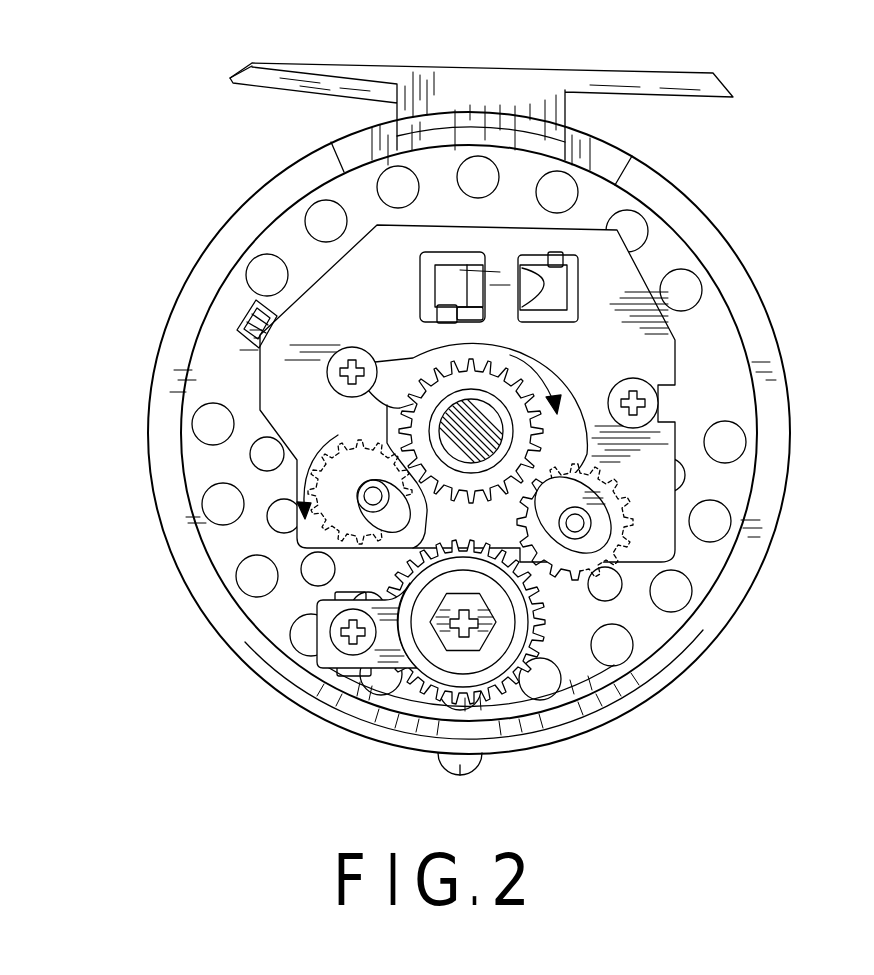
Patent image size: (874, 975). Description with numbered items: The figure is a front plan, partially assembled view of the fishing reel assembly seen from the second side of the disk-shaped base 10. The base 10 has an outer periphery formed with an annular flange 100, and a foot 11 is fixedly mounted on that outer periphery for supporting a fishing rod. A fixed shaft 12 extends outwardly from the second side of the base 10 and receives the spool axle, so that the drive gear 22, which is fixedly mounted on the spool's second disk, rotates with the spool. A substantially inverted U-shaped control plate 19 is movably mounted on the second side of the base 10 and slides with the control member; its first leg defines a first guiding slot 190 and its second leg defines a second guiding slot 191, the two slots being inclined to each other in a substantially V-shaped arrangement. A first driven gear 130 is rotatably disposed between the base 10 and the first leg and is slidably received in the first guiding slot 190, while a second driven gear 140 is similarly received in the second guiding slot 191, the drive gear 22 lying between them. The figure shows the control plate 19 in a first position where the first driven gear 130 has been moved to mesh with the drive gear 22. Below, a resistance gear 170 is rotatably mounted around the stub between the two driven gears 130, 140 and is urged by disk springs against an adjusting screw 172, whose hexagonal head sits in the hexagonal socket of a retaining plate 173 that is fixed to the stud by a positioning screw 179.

The base 10 is at (778, 287).
The foot 11 is at (538, 83).
The fixed shaft 12 is at (485, 438).
The control plate 19 is at (620, 283).
The drive gear 22 is at (505, 385).
The annular flange 100 is at (183, 537).
The first driven gear 130 is at (330, 500).
The second driven gear 140 is at (605, 688).
The resistance gear 170 is at (527, 683).
The adjusting screw 172 is at (460, 640).
The retaining plate 173 is at (398, 653).
The positioning screw 179 is at (381, 508).
The first guiding slot 190 is at (395, 528).
The second guiding slot 191 is at (608, 508).